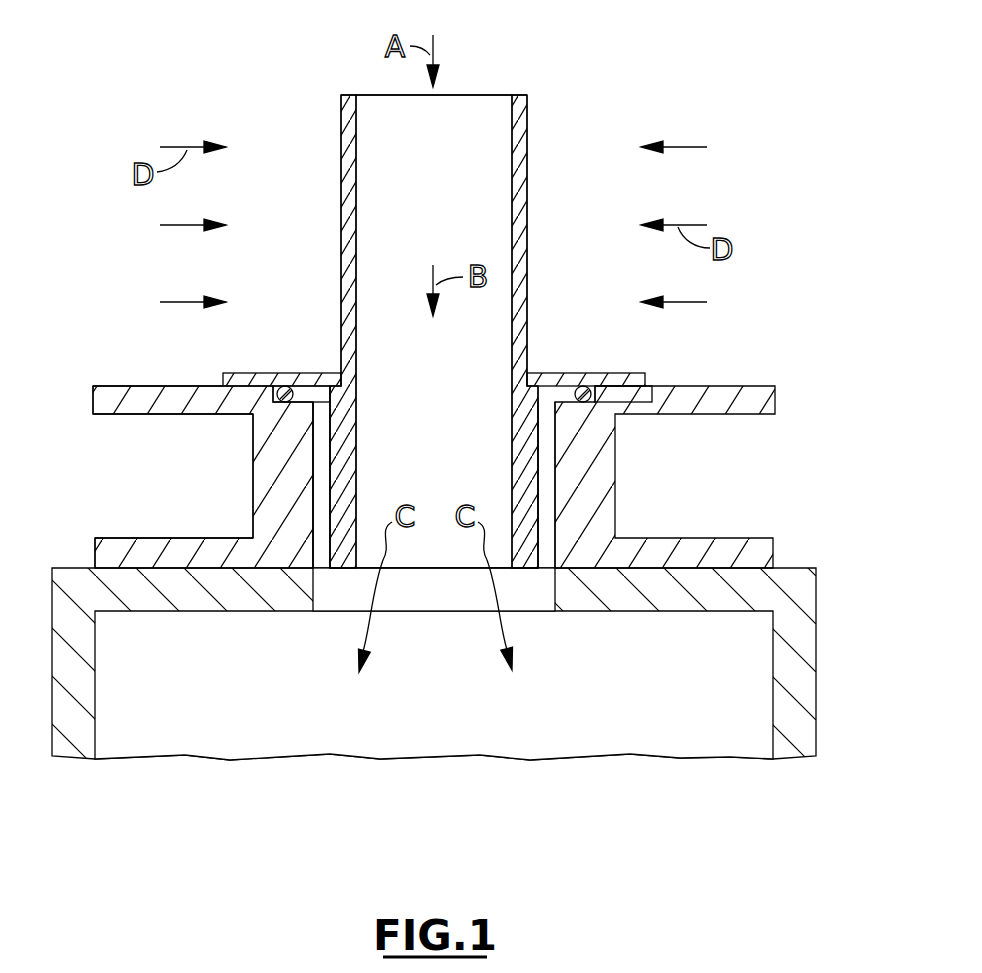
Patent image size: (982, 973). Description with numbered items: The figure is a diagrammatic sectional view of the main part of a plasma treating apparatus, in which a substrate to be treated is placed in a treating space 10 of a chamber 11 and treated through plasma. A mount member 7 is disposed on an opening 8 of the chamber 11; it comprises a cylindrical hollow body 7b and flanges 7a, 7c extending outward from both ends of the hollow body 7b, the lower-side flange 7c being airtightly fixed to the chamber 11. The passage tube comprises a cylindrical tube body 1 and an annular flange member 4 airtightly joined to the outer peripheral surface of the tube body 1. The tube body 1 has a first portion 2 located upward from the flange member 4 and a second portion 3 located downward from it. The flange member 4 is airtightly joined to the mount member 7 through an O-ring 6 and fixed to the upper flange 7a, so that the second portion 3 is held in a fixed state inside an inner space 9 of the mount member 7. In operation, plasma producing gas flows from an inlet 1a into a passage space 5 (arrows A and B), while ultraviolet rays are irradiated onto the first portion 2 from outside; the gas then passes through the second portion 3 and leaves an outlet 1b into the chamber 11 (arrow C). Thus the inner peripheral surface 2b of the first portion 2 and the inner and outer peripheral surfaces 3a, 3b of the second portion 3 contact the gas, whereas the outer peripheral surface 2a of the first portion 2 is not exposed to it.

The tube body 1 is at (538, 85).
The inlet 1a is at (455, 117).
The outlet 1b is at (435, 558).
The first portion 2 is at (522, 136).
The outer peripheral surface 2a is at (527, 180).
The inner peripheral surface 2b is at (512, 172).
The second portion 3 is at (530, 592).
The inner peripheral surface 3a is at (540, 470).
The outer peripheral surface 3b is at (512, 455).
The flange member 4 is at (603, 382).
The passage space 5 is at (420, 376).
The O-ring 6 is at (289, 385).
The mount member 7 is at (178, 370).
The flange 7a is at (110, 385).
The cylindrical hollow body 7b is at (256, 476).
The flange 7c is at (184, 545).
The opening 8 is at (353, 598).
The inner space 9 is at (324, 447).
The treating space 10 is at (680, 704).
The chamber 11 is at (805, 676).